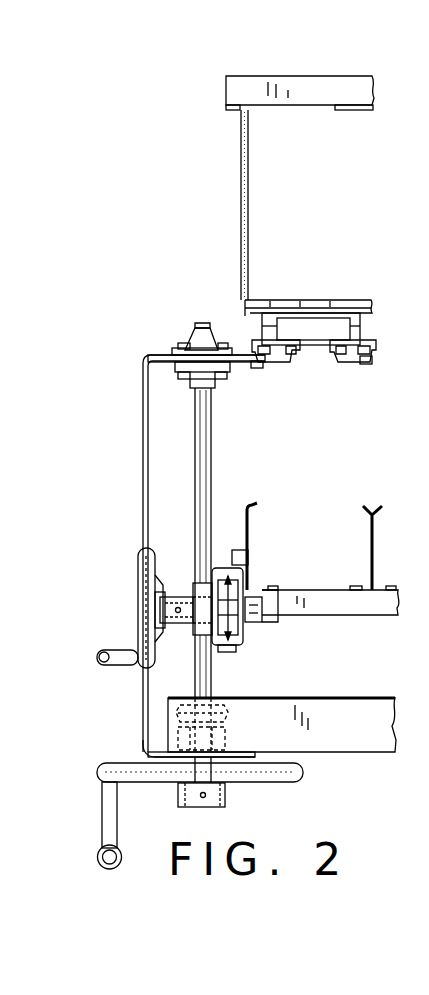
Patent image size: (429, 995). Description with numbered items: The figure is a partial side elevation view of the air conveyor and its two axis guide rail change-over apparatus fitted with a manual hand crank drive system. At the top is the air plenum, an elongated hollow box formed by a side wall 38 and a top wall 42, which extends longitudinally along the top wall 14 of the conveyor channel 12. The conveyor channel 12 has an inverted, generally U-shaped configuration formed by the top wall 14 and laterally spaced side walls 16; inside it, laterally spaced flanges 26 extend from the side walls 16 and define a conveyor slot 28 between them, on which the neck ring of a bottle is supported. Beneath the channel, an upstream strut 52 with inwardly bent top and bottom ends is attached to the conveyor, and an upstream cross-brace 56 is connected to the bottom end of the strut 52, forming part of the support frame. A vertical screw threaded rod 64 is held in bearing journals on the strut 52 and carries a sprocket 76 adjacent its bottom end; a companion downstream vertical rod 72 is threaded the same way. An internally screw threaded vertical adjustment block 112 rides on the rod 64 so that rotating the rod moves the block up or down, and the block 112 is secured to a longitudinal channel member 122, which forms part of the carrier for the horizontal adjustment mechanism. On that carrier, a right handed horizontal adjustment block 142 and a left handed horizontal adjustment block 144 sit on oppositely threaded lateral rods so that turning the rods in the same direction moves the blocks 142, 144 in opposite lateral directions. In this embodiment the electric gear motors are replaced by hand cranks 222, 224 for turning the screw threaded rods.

The conveyor channel 12 is at (308, 292).
The top wall 14 is at (327, 308).
The side walls 16 is at (262, 330).
The flanges 26 is at (312, 345).
The conveyor slot 28 is at (300, 360).
The plenum side wall 38 is at (240, 168).
The plenum top wall 42 is at (240, 92).
The upstream strut 52 is at (142, 410).
The upstream cross-brace 56 is at (377, 743).
The upstream vertical screw threaded rod 64 is at (200, 457).
The downstream vertical screw threaded rod 72 is at (175, 368).
The sprocket 76 is at (178, 714).
The vertical adjustment block 112 is at (200, 578).
The longitudinal channel member 122 is at (238, 655).
The right handed horizontal adjustment block 142 is at (268, 592).
The left handed horizontal adjustment block 144 is at (333, 604).
The hand crank 222 is at (100, 772).
The hand crank 224 is at (140, 572).